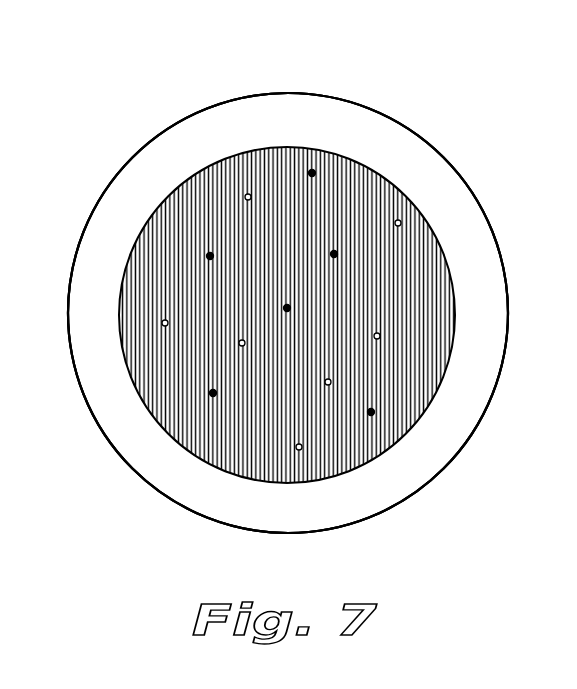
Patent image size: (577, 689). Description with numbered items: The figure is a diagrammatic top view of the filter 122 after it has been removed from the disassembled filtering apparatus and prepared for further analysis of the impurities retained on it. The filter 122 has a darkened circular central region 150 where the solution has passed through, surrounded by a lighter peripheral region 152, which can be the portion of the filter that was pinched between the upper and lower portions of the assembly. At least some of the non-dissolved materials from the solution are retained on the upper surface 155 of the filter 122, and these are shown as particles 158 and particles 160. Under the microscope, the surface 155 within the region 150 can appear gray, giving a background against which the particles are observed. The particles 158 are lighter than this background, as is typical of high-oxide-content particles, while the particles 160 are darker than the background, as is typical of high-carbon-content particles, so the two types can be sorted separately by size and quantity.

The filter 122 is at (452, 104).
The central region 150 is at (231, 470).
The peripheral region 152 is at (178, 481).
The upper surface 155 is at (434, 459).
The particles 158 is at (238, 189).
The particles 160 is at (326, 165).